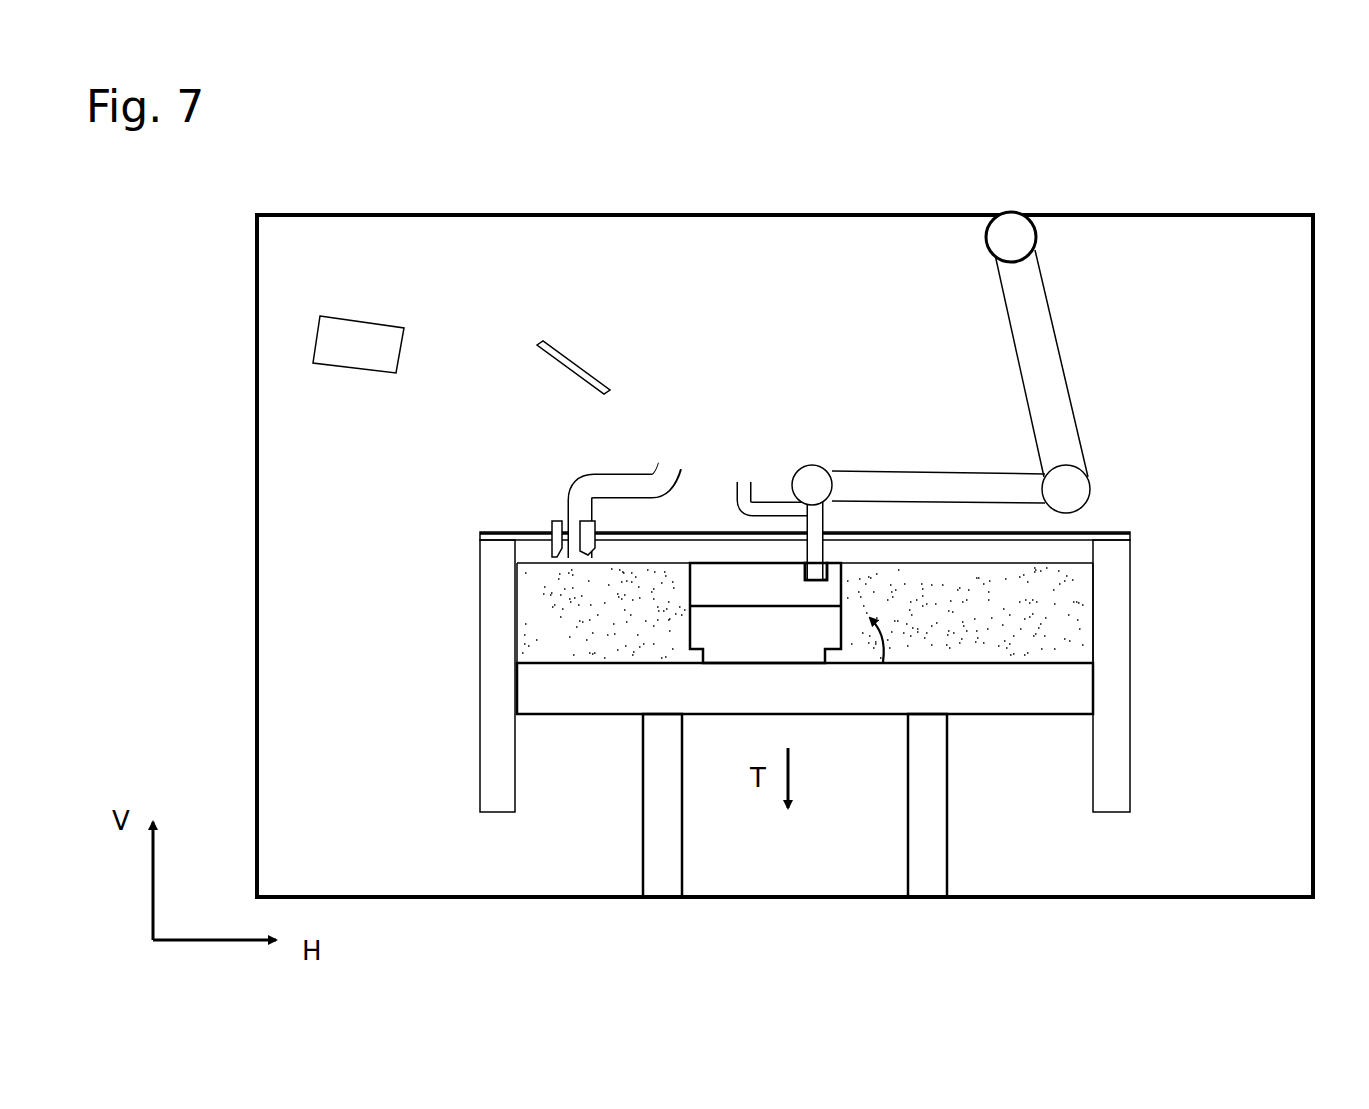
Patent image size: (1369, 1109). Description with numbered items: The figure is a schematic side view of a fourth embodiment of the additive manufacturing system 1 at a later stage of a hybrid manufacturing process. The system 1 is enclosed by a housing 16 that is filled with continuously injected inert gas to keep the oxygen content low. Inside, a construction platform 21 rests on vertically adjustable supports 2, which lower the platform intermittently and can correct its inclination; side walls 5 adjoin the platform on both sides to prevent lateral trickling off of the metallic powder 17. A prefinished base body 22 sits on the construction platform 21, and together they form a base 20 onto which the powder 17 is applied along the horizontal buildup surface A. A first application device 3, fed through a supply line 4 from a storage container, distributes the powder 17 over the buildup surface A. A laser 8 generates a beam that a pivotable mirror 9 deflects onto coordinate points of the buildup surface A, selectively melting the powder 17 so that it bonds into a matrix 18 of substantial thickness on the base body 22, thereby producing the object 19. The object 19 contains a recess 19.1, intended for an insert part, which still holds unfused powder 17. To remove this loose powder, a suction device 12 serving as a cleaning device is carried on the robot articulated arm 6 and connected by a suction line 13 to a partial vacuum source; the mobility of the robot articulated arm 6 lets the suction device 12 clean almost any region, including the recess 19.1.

The additive manufacturing system 1 is at (526, 178).
The vertically adjustable supports 2 is at (670, 793).
The first application device 3 is at (543, 520).
The supply line 4 is at (618, 478).
The side walls 5 is at (480, 661).
The robot articulated arm 6 is at (955, 397).
The laser 8 is at (365, 360).
The pivotable mirror 9 is at (571, 361).
The suction device 12 is at (845, 511).
The suction line 13 is at (768, 508).
The housing 16 is at (807, 214).
The metallic powder 17 is at (613, 606).
The matrix 18 is at (775, 600).
The object 19 is at (863, 714).
The recess 19.1 is at (801, 556).
The base 20 is at (650, 627).
The construction platform 21 is at (771, 705).
The base body 22 is at (779, 645).
The buildup surface A is at (1022, 553).